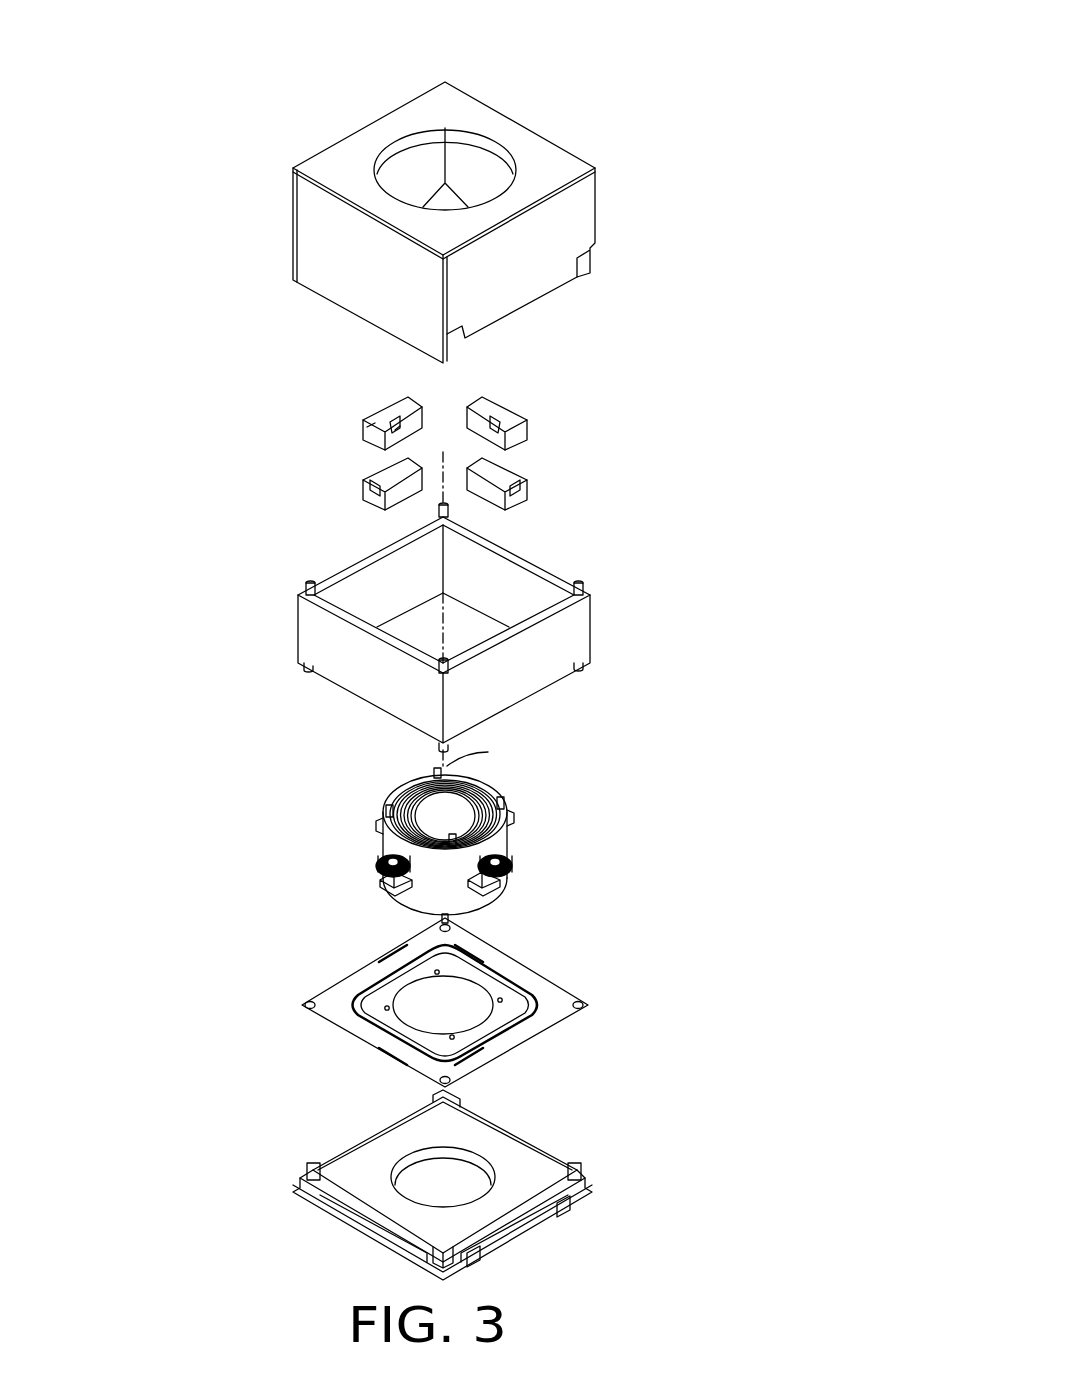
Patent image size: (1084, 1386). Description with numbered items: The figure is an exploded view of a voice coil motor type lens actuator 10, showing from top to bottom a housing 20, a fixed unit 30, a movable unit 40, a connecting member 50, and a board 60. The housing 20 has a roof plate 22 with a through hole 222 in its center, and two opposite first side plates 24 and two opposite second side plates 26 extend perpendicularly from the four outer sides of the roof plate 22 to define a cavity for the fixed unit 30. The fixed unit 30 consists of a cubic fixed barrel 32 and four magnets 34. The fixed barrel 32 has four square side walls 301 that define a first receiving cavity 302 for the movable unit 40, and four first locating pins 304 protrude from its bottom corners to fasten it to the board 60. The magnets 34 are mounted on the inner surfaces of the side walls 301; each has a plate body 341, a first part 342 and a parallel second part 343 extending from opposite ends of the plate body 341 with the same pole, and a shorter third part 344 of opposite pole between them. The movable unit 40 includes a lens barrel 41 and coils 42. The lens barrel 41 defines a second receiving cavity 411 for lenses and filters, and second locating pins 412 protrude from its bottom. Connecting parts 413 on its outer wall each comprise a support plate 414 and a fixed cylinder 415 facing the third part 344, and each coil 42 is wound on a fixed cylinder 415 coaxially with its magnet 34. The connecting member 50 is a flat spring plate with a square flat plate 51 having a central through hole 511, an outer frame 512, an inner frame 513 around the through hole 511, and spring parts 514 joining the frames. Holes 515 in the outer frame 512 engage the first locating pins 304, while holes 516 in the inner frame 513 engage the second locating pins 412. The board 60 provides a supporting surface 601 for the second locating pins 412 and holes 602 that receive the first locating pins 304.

The lens actuator 10 is at (448, 42).
The housing 20 is at (563, 133).
The roof plate 22 is at (348, 166).
The through hole 222 is at (405, 160).
The first side plates 24 is at (367, 268).
The second side plates 26 is at (538, 270).
The fixed unit 30 is at (717, 388).
The cubic fixed barrel 32 is at (613, 581).
The side walls 301 is at (512, 680).
The first receiving cavity 302 is at (385, 583).
The first locating pins 304 is at (303, 672).
The magnets 34 is at (523, 427).
The plate body 341 is at (390, 413).
The first part 342 is at (368, 427).
The second part 343 is at (418, 423).
The third part 344 is at (397, 430).
The movable unit 40 is at (583, 832).
The lens barrel 41 is at (503, 840).
The second receiving cavity 411 is at (410, 800).
The second locating pins 412 is at (452, 920).
The connecting parts 413 is at (307, 838).
The support plate 414 is at (383, 882).
The fixed cylinder 415 is at (387, 853).
The coils 42 is at (512, 862).
The connecting member 50 is at (578, 984).
The flat plate 51 is at (587, 1007).
The through hole 511 is at (470, 1000).
The outer frame 512 is at (537, 1025).
The inner frame 513 is at (370, 1007).
The spring parts 514 is at (497, 1037).
The holes 515 is at (307, 1005).
The holes 516 is at (385, 1008).
The board 60 is at (580, 1161).
The supporting surface 601 is at (490, 1143).
The holes 602 is at (453, 1260).